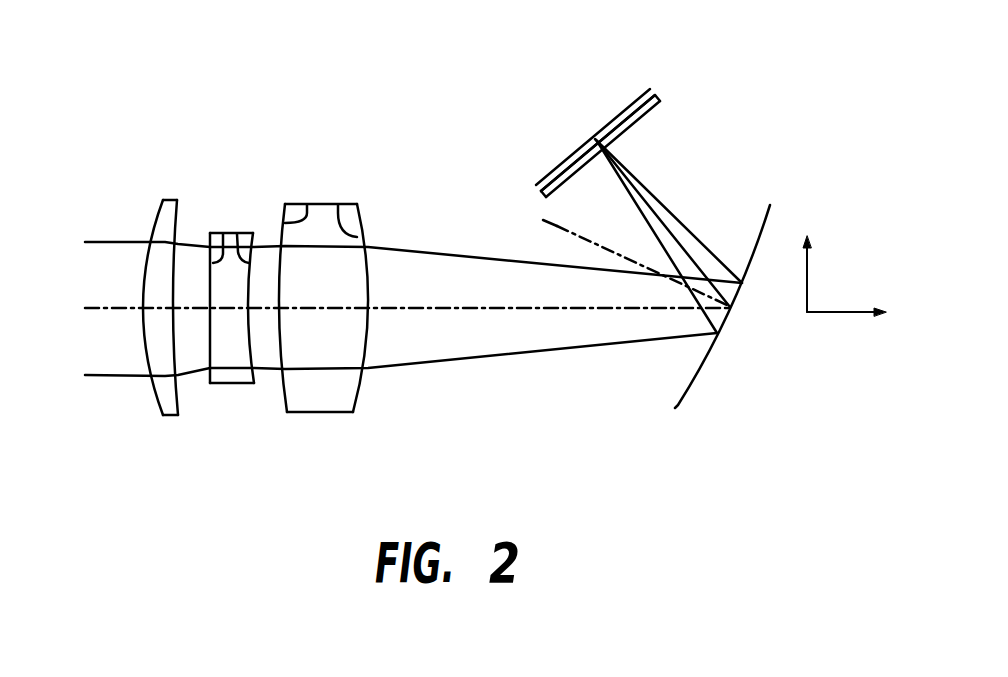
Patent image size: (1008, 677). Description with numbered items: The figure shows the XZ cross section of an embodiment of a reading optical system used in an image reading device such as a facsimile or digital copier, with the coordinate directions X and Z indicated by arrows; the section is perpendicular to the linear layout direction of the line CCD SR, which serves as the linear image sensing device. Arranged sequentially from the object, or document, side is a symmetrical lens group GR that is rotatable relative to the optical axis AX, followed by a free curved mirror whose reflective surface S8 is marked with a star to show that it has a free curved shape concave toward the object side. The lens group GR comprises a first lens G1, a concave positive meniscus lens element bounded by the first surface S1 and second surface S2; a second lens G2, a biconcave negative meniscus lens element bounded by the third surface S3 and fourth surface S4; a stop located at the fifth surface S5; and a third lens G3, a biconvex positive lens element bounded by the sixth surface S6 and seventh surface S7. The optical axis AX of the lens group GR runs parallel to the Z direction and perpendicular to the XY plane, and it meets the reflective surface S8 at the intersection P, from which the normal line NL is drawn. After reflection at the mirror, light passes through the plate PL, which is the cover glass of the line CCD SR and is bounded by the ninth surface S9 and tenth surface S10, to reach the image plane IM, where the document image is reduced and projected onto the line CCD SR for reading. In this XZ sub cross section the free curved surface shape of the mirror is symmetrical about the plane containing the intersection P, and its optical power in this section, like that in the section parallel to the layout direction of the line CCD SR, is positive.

The first surface S1 is at (154, 218).
The second surface S2 is at (177, 213).
The third surface S3 is at (222, 237).
The fourth surface S4 is at (237, 234).
The fifth surface S5 is at (253, 234).
The sixth surface S6 is at (307, 204).
The seventh surface S7 is at (338, 205).
The reflective surface S8 is at (760, 233).
The ninth surface S9 is at (649, 114).
The tenth surface S10 is at (660, 98).
The first lens G1 is at (138, 299).
The second lens G2 is at (247, 269).
The third lens G3 is at (323, 298).
The lens group GR is at (231, 309).
The image plane IM is at (630, 106).
The line CCD SR is at (590, 138).
The plate PL is at (539, 195).
The normal line NL is at (547, 223).
The optical axis AX is at (501, 310).
The intersection P is at (744, 311).
The X direction X is at (806, 257).
The Z direction Z is at (853, 311).